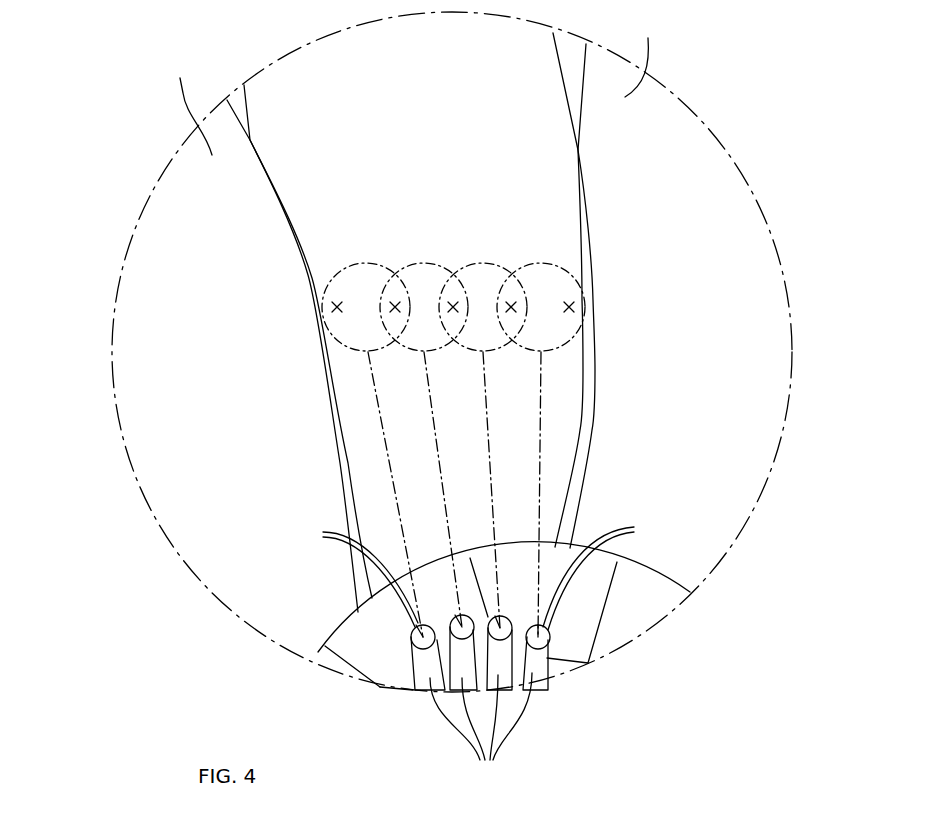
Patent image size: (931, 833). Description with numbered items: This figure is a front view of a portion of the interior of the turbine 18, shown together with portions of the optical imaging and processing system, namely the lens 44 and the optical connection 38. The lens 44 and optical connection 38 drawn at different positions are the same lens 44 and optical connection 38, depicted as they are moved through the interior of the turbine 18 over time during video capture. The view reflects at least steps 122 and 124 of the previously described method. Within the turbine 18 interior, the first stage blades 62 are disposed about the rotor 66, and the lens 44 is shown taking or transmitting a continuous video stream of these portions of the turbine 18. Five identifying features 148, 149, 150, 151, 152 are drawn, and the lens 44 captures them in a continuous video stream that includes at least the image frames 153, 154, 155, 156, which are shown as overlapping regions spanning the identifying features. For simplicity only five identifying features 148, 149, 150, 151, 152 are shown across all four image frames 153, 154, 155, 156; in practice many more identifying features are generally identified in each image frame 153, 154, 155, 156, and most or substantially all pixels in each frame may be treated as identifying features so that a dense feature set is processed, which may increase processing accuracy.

The turbine 18 is at (727, 33).
The step 122 is at (89, 110).
The step 124 is at (89, 147).
The first stage blades 62 is at (272, 113).
The optical connection 38 is at (481, 732).
The lens 44 is at (478, 575).
The rotor 66 is at (633, 607).
The identifying feature 148 is at (336, 304).
The identifying feature 149 is at (393, 308).
The identifying feature 150 is at (453, 312).
The identifying feature 151 is at (515, 308).
The identifying feature 152 is at (568, 305).
The image frame 153 is at (348, 268).
The image frame 154 is at (406, 268).
The image frame 155 is at (464, 268).
The image frame 156 is at (521, 268).